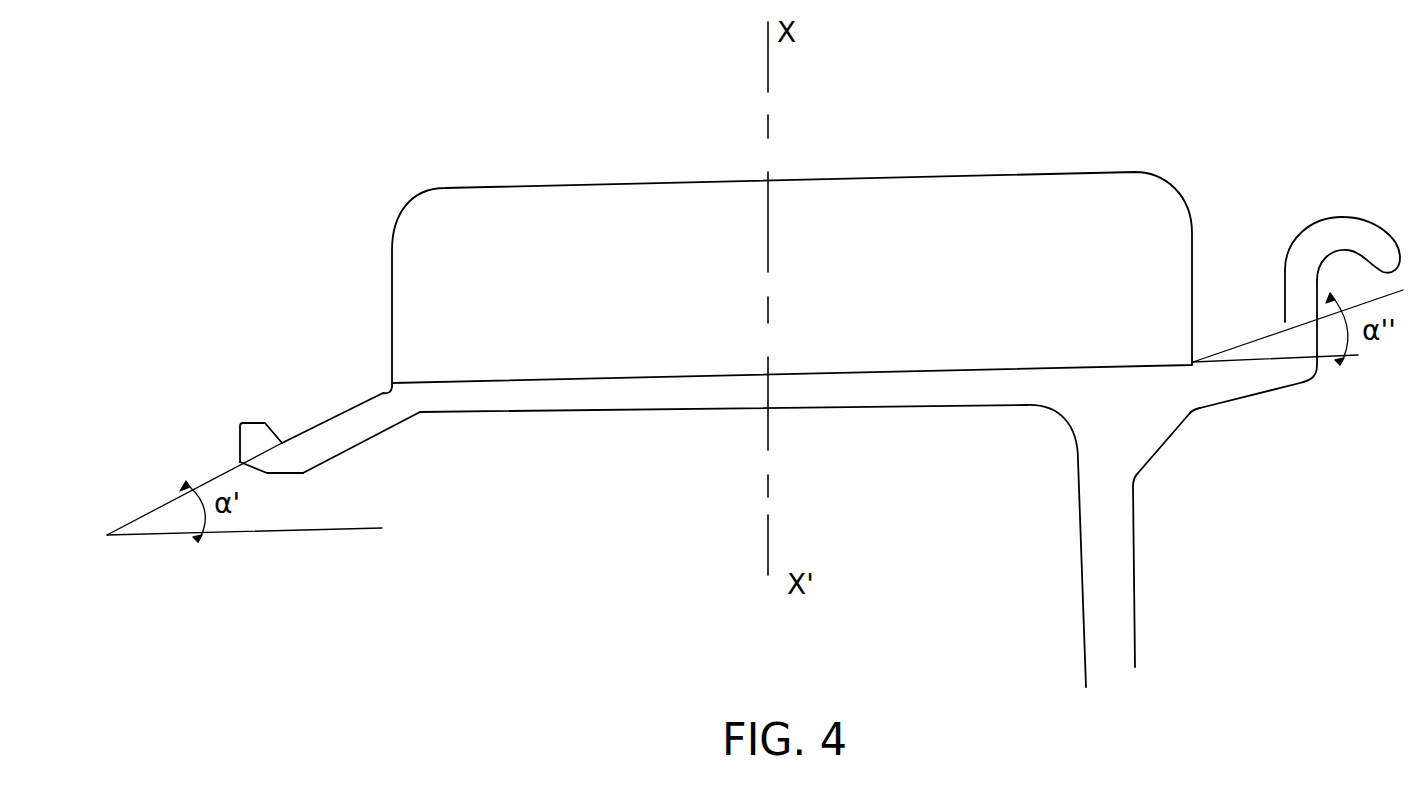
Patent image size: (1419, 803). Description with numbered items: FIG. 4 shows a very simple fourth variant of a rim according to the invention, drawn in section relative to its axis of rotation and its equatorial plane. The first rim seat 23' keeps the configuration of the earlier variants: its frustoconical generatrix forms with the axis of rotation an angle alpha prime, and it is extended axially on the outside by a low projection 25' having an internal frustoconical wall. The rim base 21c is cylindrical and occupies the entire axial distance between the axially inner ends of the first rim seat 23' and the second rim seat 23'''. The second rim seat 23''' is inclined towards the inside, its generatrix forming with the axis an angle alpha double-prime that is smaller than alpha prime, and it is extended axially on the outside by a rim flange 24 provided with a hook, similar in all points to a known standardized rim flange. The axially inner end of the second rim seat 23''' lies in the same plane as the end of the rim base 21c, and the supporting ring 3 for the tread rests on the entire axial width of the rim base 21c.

The supporting ring 3 is at (671, 232).
The rim base 21c is at (635, 393).
The first rim seat 23' is at (351, 370).
The projection 25' is at (271, 376).
The second rim seat 23''' is at (1258, 285).
The rim flange 24 is at (1320, 237).